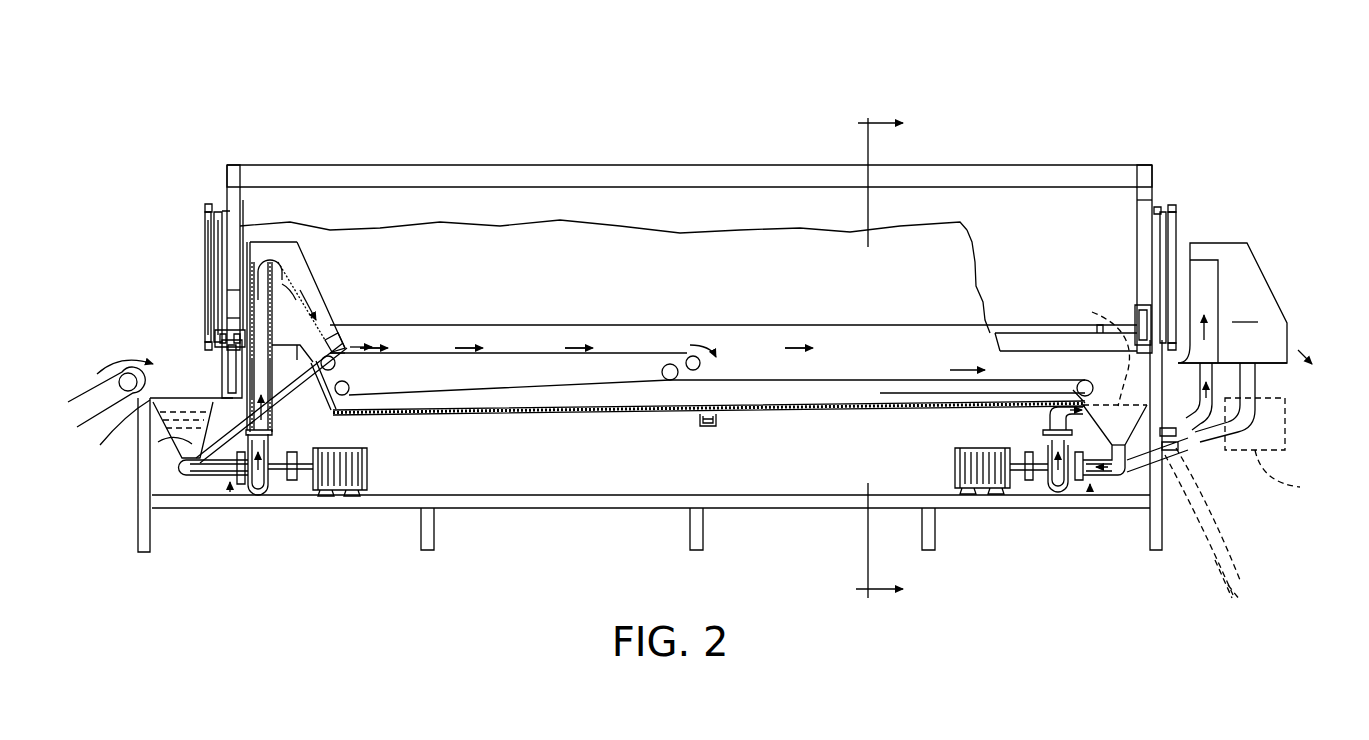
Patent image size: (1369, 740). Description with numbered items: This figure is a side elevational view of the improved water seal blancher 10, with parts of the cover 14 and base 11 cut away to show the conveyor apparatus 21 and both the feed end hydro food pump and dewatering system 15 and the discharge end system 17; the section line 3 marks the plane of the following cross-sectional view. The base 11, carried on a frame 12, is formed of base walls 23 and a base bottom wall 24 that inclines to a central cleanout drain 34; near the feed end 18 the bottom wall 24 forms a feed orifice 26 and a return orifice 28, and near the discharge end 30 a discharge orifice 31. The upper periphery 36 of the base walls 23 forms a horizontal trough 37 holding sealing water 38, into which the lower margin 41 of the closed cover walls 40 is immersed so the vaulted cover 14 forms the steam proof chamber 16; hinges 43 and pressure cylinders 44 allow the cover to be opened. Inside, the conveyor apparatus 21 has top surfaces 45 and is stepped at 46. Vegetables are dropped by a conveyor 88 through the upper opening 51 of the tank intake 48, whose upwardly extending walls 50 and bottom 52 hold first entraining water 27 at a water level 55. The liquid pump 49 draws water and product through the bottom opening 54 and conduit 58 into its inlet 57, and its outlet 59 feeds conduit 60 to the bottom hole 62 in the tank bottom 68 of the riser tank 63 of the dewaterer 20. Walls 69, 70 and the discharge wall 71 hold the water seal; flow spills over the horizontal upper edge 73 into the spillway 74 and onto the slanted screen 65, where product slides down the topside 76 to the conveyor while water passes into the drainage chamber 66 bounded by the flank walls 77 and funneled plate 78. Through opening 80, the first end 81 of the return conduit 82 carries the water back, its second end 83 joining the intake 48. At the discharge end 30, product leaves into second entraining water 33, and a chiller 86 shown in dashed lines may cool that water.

The section line 3 is at (892, 359).
The water seal blancher 10 is at (1112, 156).
The base 11 is at (355, 416).
The frame 12 is at (1035, 502).
The cover 14 is at (1015, 267).
The hydro food pump and dewatering system 15 is at (230, 498).
The steam proof chamber 16 is at (596, 235).
The hydro food pump and dewatering system 17 is at (1078, 494).
The feed end 18 is at (224, 202).
The dewaterer 20 is at (340, 262).
The conveyor apparatus 21 is at (650, 365).
The base walls 23 is at (322, 398).
The base bottom wall 24 is at (815, 410).
The feed orifice 26 is at (248, 386).
The first entraining water 27 is at (248, 262).
The return orifice 28 is at (244, 348).
The discharge end 30 is at (1152, 227).
The discharge orifice 31 is at (1240, 575).
The second entraining water 33 is at (1245, 602).
The cleanout drain 34 is at (700, 428).
The upper periphery 36 is at (226, 300).
The trough 37 is at (1050, 333).
The sealing water 38 is at (226, 322).
The closed cover walls 40 is at (228, 190).
The lower margin 41 is at (276, 347).
The hinges 43 is at (1134, 320).
The pressure cylinders 44 is at (208, 210).
The top surfaces 45 is at (521, 355).
The step 46 is at (703, 367).
The tank intake 48 is at (180, 452).
The liquid pump 49 is at (284, 496).
The upwardly extending walls 50 is at (198, 442).
The upper opening 51 is at (150, 399).
The bottom 52 is at (172, 474).
The bottom opening 54 is at (196, 480).
The water level 55 is at (152, 394).
The inlet 57 is at (243, 486).
The conduit 58 is at (238, 480).
The outlet 59 is at (294, 483).
The conduit 60 is at (271, 398).
The bottom hole 62 is at (248, 374).
The riser tank 63 is at (212, 238).
The slanted screen 65 is at (322, 258).
The drainage chamber 66 is at (332, 316).
The tank bottom 68 is at (346, 383).
The upwardly extending wall 69 is at (228, 272).
The upwardly extending wall 70 is at (210, 262).
The discharge wall 71 is at (340, 320).
The horizontal upper edge 73 is at (332, 255).
The spillway 74 is at (318, 247).
The topside 76 is at (340, 268).
The flank walls 77 is at (335, 263).
The funneled plate 78 is at (332, 298).
The opening 80 is at (340, 332).
The first end 81 is at (357, 356).
The return conduit 82 is at (306, 472).
The second end 83 is at (210, 478).
The chiller 86 is at (1300, 487).
The conveyor 88 is at (92, 393).